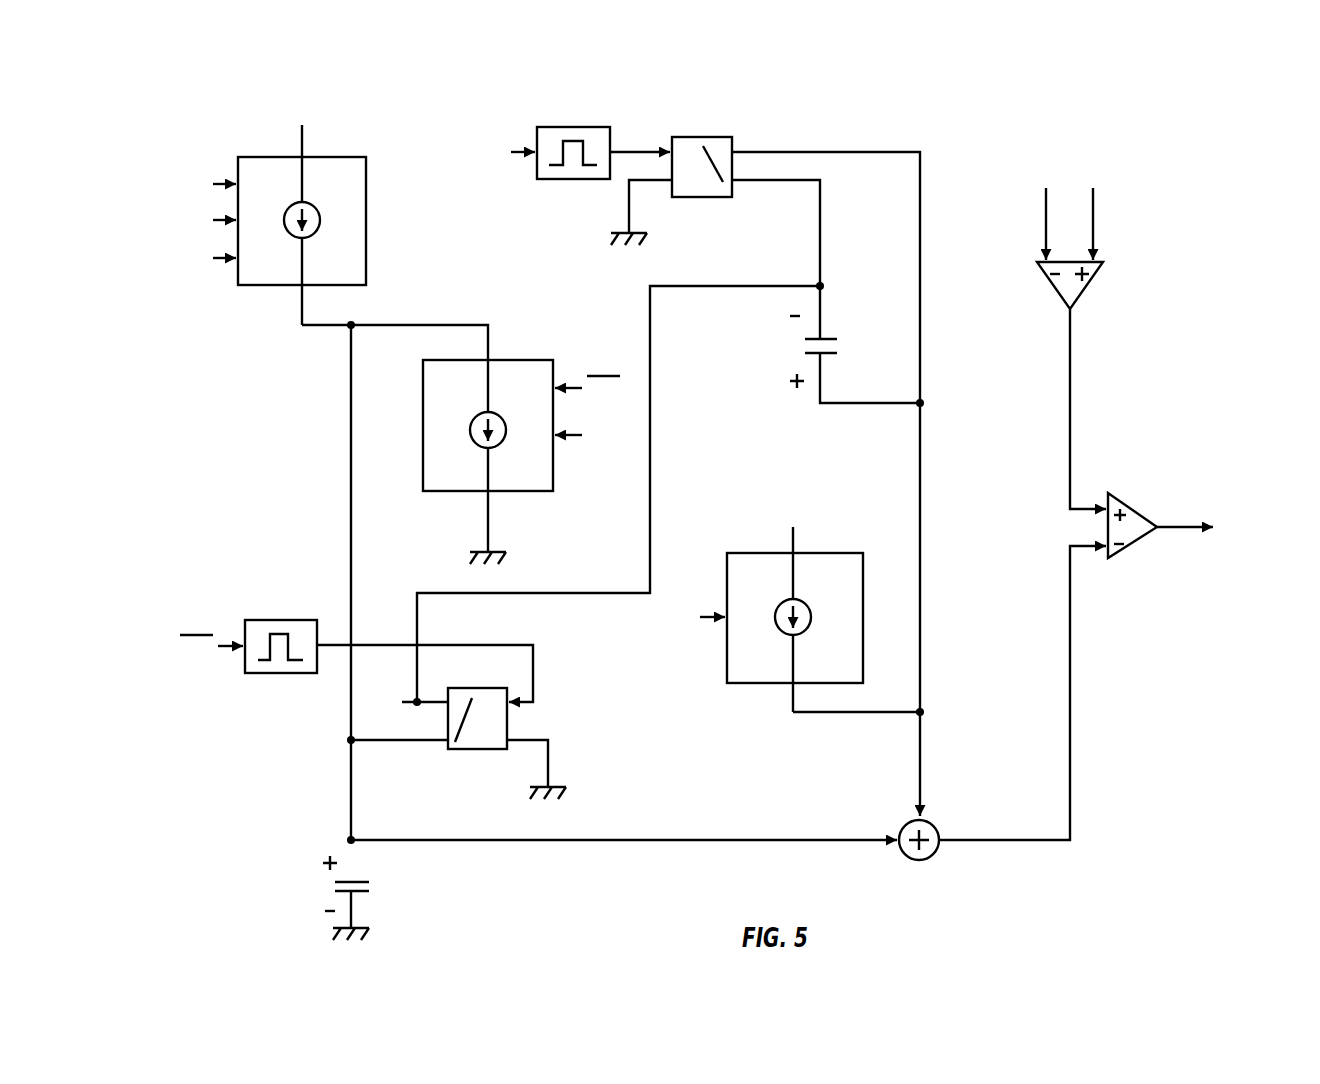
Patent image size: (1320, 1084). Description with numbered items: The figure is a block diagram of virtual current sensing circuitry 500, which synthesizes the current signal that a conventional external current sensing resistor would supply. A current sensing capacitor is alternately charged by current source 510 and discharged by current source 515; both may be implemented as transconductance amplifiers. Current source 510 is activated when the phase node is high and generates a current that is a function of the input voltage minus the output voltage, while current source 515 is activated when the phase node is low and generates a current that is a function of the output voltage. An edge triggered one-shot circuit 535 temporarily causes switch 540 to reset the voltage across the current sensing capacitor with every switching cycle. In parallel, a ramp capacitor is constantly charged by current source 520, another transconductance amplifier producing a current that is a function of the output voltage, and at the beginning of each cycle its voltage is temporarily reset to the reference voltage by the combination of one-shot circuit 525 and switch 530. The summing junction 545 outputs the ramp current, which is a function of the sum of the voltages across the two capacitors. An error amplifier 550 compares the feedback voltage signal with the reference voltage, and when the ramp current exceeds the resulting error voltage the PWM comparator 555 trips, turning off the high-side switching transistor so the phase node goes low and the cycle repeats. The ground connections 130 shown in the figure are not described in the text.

The virtual current sensing circuitry 500 is at (1148, 170).
The current source 510 is at (287, 157).
The current source 515 is at (472, 360).
The current source 520 is at (762, 553).
The one-shot circuit 525 is at (598, 127).
The switch 530 is at (706, 137).
The edge triggered one-shot circuit 535 is at (287, 620).
The switch 540 is at (493, 688).
The summing junction 545 is at (933, 855).
The error amplifier 550 is at (1040, 260).
The PWM comparator 555 is at (1125, 500).
The ground 130 is at (641, 245).